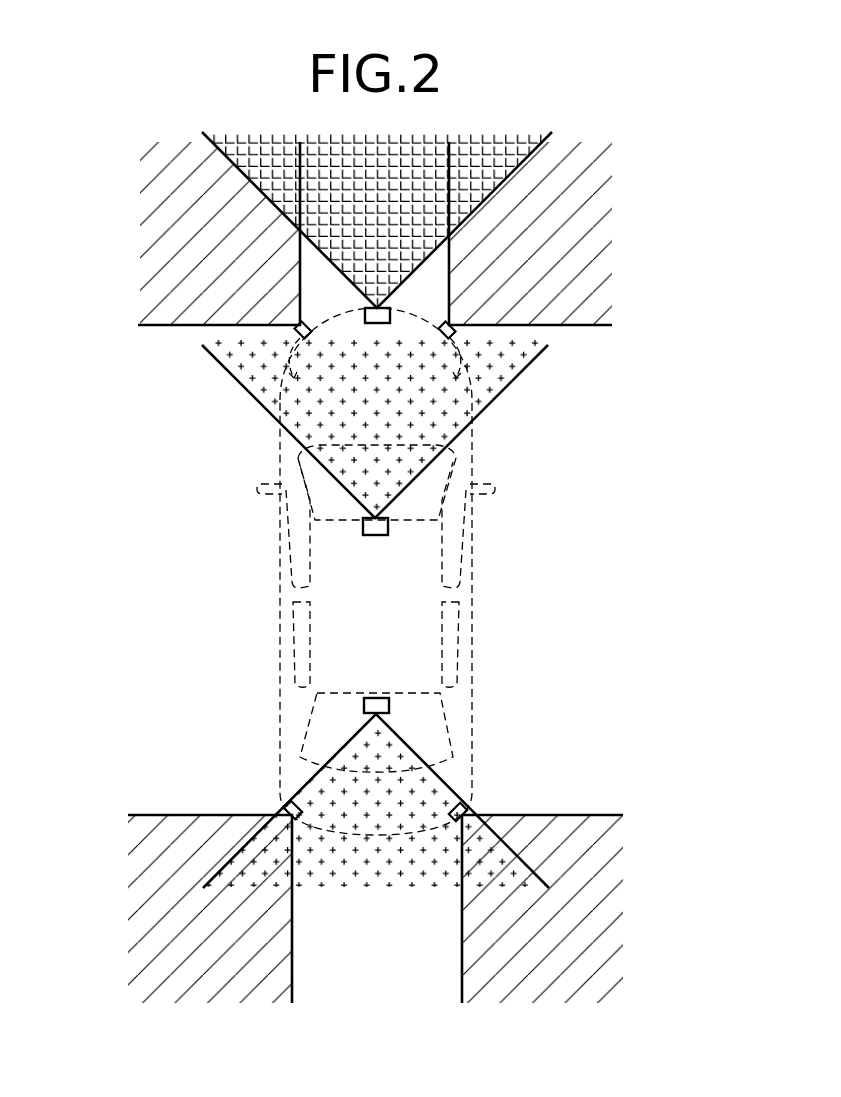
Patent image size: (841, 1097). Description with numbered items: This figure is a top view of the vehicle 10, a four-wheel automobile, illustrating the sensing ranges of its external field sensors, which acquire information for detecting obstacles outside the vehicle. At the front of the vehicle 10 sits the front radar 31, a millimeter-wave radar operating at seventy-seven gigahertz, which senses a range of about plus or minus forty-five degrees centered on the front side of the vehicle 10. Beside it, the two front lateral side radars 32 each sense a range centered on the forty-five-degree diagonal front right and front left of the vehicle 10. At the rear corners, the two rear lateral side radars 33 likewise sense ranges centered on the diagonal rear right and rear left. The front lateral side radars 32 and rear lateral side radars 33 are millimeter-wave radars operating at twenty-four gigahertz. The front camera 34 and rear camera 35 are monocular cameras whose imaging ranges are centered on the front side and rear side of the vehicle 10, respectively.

The vehicle 10 is at (474, 594).
The front radar 31 is at (380, 313).
The front lateral side radars 32 is at (297, 331).
The rear lateral side radars 33 is at (289, 806).
The front camera 34 is at (388, 527).
The rear camera 35 is at (389, 705).